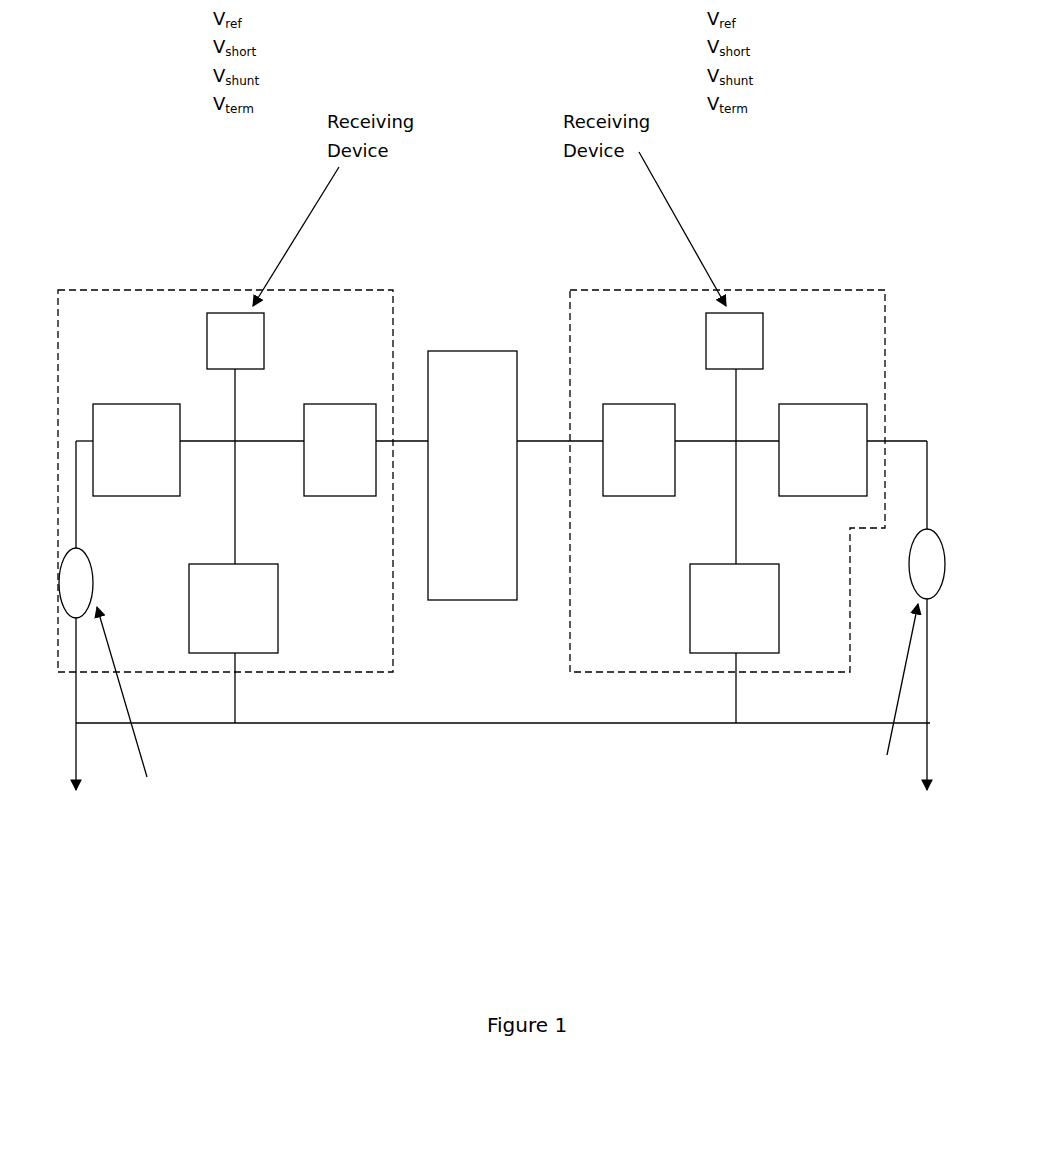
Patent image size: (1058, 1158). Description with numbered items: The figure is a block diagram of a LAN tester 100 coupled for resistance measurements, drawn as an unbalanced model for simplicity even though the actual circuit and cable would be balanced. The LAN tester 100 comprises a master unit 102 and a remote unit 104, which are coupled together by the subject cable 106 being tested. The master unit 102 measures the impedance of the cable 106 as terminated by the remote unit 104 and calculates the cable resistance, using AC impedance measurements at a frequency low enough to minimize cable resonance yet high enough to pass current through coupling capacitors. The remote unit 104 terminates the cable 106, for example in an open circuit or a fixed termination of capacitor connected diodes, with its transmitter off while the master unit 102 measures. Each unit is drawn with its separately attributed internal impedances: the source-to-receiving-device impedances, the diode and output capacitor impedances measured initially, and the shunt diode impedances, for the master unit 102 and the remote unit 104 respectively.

The LAN tester 100 is at (368, 920).
The master unit 102 is at (270, 676).
The remote unit 104 is at (816, 676).
The cable 106 is at (482, 603).